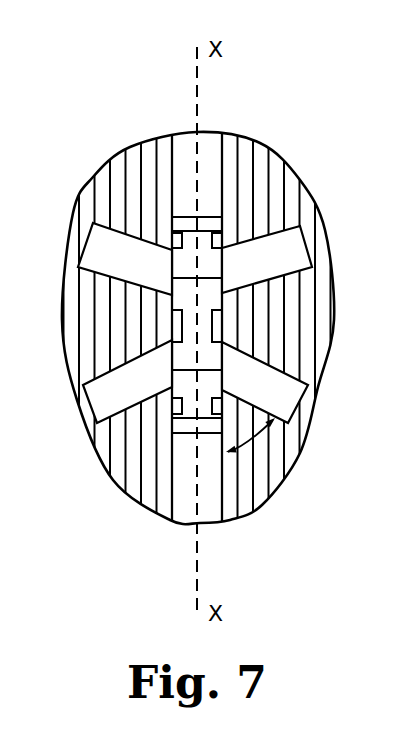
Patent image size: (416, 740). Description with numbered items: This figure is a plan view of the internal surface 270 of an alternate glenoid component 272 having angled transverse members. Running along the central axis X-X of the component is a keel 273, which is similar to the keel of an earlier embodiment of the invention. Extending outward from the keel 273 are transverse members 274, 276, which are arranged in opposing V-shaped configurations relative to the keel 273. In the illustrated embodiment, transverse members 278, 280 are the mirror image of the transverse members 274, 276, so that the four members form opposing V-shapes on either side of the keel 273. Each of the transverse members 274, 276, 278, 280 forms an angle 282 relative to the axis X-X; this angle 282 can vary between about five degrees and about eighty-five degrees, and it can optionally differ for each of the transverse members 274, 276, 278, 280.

The internal surface 270 is at (246, 165).
The glenoid component 272 is at (305, 176).
The keel 273 is at (185, 158).
The transverse member 274 is at (97, 400).
The transverse member 276 is at (290, 392).
The transverse member 278 is at (100, 250).
The transverse member 280 is at (287, 255).
The angle 282 is at (232, 452).